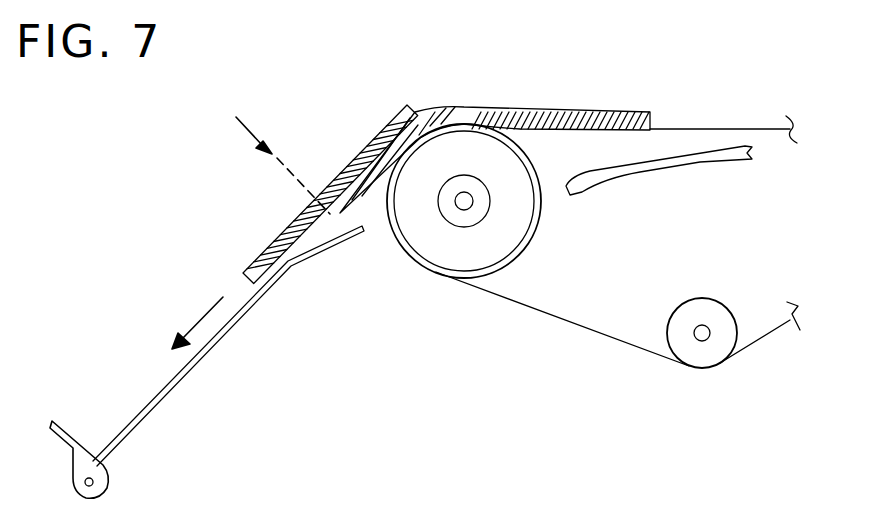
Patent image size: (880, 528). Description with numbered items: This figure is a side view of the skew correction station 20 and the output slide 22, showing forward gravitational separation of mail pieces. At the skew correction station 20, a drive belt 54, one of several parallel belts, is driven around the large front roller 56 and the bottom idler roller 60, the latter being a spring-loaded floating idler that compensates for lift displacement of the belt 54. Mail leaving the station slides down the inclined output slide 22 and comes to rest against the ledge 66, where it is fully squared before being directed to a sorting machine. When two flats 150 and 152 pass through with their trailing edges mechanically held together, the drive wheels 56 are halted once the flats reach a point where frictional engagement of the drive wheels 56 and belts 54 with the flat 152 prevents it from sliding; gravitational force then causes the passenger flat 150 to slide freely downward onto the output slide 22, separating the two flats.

The passenger flat 150 is at (364, 146).
The flat 152 is at (490, 106).
The front roller 56 is at (477, 243).
The drive belt 54 is at (733, 128).
The skew correction station 20 is at (647, 268).
The bottom idler roller 60 is at (712, 350).
The ledge 66 is at (74, 440).
The output slide 22 is at (208, 357).